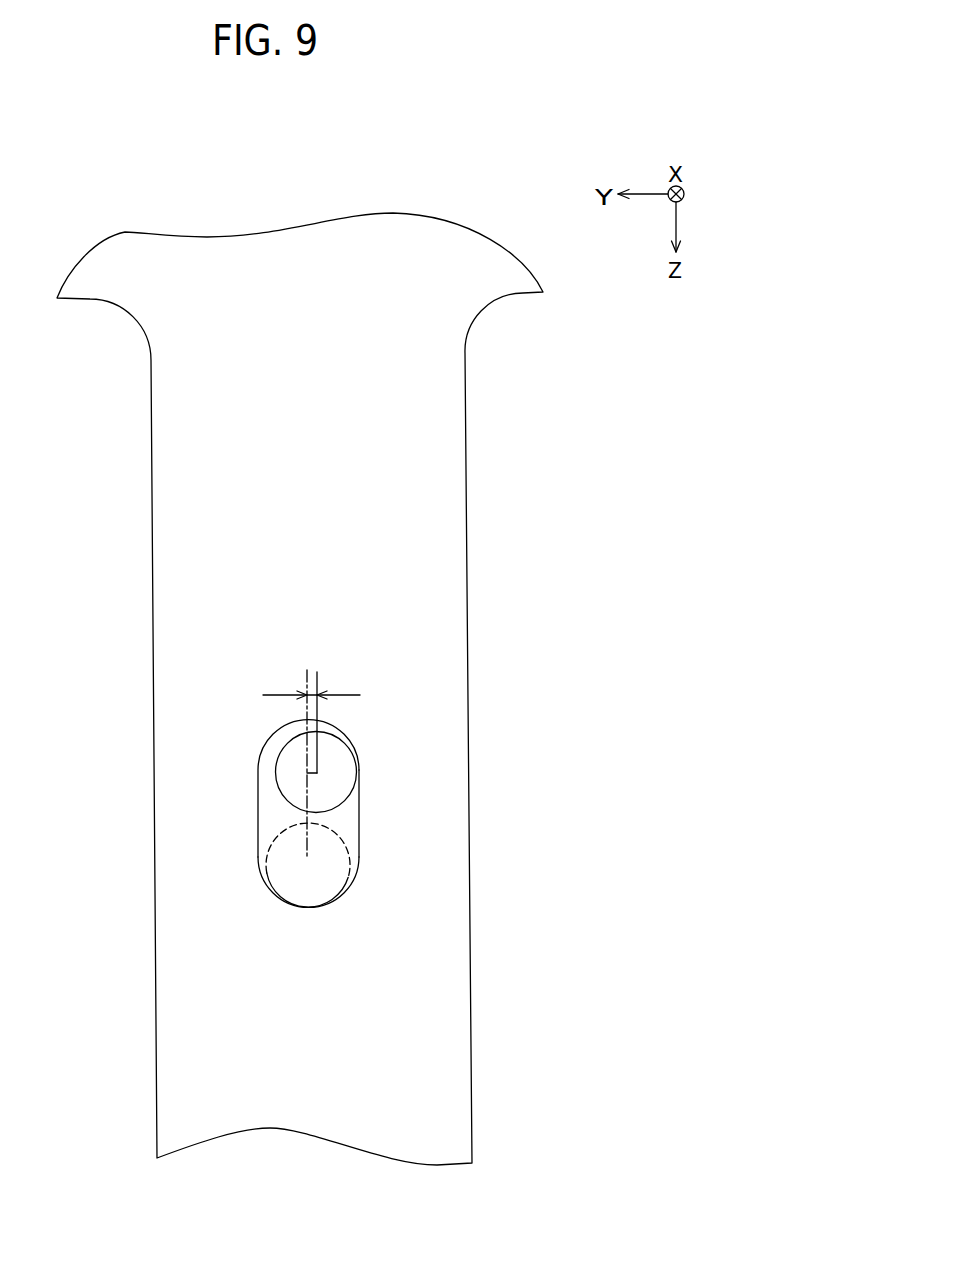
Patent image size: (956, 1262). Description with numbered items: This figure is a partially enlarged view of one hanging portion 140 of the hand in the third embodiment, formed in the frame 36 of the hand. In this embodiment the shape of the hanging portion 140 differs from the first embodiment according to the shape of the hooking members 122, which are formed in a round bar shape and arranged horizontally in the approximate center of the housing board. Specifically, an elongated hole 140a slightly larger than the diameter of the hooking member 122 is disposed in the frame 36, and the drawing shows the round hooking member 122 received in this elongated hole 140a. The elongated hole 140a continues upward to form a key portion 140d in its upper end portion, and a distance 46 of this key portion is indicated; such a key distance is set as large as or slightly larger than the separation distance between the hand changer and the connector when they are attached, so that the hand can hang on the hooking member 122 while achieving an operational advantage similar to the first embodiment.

The frame 36 is at (467, 488).
The distance 46 is at (313, 672).
The hooking member 122 is at (352, 733).
The hanging portion 140 is at (362, 872).
The elongated hole 140a is at (258, 793).
The key portion 140d is at (360, 770).